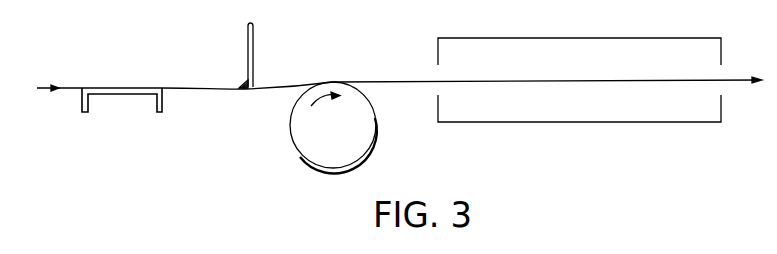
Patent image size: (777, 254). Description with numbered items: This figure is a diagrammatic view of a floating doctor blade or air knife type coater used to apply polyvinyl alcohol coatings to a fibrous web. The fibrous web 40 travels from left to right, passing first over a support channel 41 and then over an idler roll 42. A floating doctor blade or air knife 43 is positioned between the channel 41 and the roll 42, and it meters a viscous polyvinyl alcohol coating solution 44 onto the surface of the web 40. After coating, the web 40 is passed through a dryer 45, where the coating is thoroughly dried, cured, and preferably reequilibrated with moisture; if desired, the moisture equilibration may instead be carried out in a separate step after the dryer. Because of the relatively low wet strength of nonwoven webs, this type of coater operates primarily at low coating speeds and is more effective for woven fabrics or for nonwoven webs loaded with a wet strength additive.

The fibrous web 40 is at (55, 90).
The support channel 41 is at (115, 94).
The idler roll 42 is at (293, 140).
The floating doctor blade or air knife 43 is at (248, 53).
The polyvinyl alcohol coating solution 44 is at (243, 80).
The dryer 45 is at (590, 122).